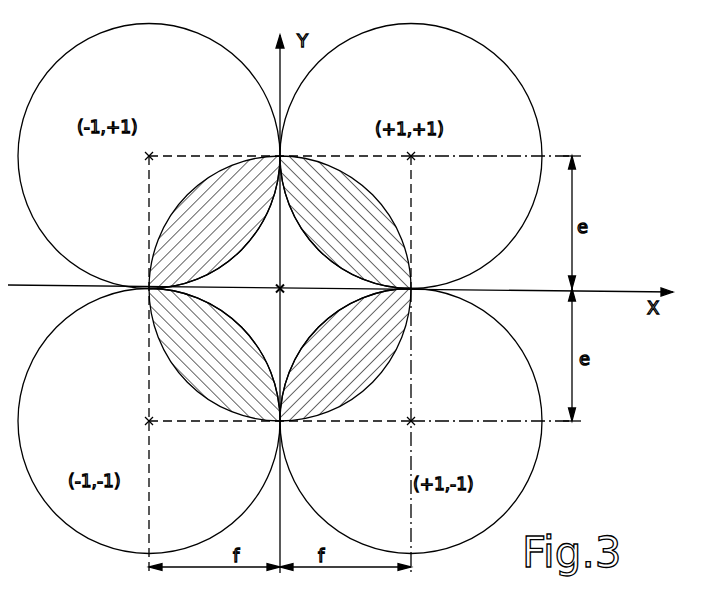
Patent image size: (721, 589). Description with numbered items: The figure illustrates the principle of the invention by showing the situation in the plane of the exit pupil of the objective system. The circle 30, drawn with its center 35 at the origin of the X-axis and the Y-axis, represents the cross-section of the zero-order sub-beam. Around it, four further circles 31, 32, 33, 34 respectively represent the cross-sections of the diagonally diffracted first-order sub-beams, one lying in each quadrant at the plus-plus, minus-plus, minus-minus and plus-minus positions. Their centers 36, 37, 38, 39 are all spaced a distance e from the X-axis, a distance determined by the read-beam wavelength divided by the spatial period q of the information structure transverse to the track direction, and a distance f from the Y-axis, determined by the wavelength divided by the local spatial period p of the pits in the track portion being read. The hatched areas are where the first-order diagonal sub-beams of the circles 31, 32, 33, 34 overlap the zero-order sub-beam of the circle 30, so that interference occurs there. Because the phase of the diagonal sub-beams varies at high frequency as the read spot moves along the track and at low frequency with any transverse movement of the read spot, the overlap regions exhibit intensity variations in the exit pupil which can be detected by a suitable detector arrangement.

The circle 30 is at (186, 198).
The circle 31 is at (502, 57).
The circle 32 is at (57, 58).
The circle 33 is at (84, 539).
The circle 34 is at (476, 541).
The center 35 is at (282, 287).
The center 36 is at (414, 158).
The center 37 is at (146, 156).
The center 38 is at (146, 421).
The center 39 is at (414, 424).